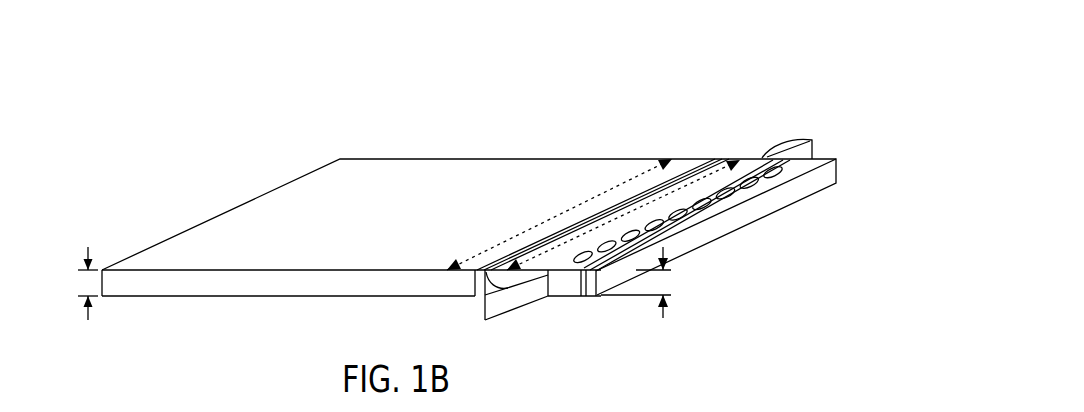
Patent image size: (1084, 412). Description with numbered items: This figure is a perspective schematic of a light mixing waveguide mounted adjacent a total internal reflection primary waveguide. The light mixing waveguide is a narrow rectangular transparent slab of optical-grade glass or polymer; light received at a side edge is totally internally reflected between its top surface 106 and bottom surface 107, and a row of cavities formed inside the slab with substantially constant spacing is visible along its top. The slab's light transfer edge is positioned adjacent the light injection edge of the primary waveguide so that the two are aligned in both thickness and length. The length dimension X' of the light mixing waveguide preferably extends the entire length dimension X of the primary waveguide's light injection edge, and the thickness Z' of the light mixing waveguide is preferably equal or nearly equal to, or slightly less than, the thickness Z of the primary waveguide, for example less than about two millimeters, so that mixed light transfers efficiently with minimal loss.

The top surface 106 is at (762, 158).
The bottom surface 107 is at (567, 296).
The length dimension X is at (559, 214).
The length dimension X' is at (623, 215).
The thickness Z is at (81, 283).
The thickness Z' is at (647, 282).